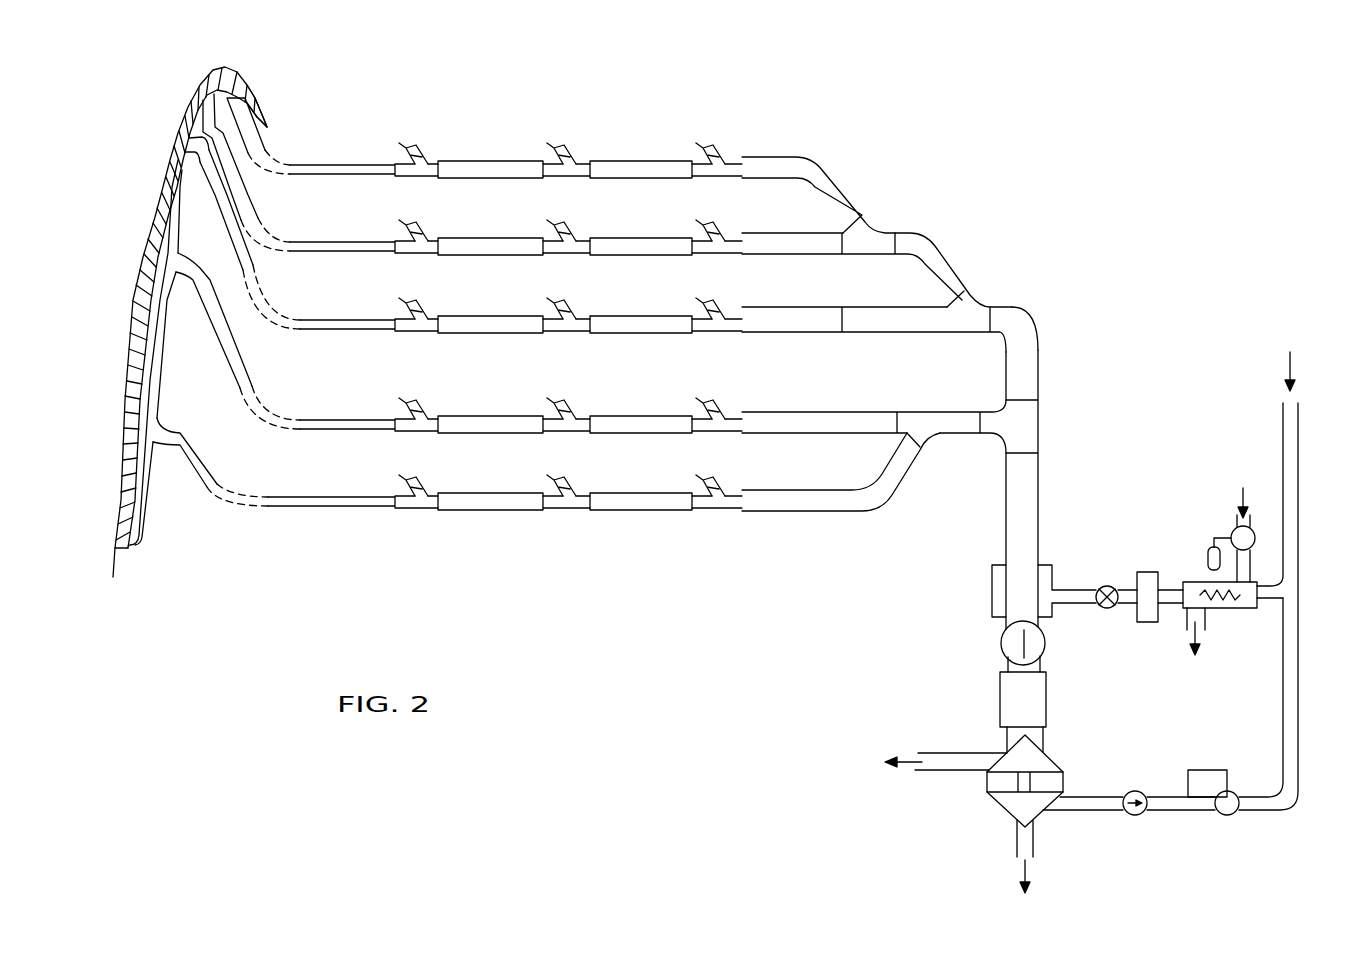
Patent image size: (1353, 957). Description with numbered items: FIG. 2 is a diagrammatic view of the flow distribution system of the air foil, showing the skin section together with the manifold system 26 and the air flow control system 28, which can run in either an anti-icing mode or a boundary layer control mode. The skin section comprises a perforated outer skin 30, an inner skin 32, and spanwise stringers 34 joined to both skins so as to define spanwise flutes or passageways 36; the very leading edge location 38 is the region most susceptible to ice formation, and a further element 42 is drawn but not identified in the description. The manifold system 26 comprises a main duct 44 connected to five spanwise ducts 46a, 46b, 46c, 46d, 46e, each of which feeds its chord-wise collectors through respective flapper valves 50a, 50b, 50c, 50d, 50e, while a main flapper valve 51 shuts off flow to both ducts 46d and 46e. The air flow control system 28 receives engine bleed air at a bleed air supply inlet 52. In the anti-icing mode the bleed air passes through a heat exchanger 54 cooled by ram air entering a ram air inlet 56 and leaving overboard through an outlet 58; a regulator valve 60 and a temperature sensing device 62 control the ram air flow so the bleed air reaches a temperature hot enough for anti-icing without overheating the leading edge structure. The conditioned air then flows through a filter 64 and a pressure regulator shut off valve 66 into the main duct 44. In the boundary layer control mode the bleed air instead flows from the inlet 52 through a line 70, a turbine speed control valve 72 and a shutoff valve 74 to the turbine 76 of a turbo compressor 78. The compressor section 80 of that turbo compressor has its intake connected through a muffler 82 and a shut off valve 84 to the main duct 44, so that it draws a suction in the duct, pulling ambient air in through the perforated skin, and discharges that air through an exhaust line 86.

The manifold system 26 is at (605, 540).
The air flow control system 28 is at (1122, 512).
The outer skin 30 is at (135, 300).
The inner skin 32 is at (152, 306).
The stringers 34 is at (150, 253).
The flutes or passageways 36 is at (178, 184).
The leading edge location 38 is at (228, 66).
The skin trailing hook 42 is at (268, 124).
The main duct 44 is at (1015, 482).
The spanwise duct 46a is at (662, 159).
The spanwise duct 46b is at (657, 236).
The spanwise duct 46c is at (657, 314).
The spanwise duct 46d is at (662, 410).
The spanwise duct 46e is at (667, 489).
The flapper valve 50a is at (427, 160).
The flapper valve 50b is at (427, 237).
The flapper valve 50c is at (427, 315).
The flapper valve 50d is at (427, 415).
The flapper valve 50e is at (427, 492).
The main flapper valve 51 is at (927, 420).
The bleed air supply inlet 52 is at (1282, 393).
The heat exchanger 54 is at (1262, 582).
The ram air inlet 56 is at (1238, 512).
The outlet 58 is at (1207, 630).
The regulator valve 60 is at (1256, 545).
The temperature sensing device 62 is at (1210, 548).
The filter 64 is at (1141, 620).
The pressure regulator shut off valve 66 is at (1107, 585).
The line 70 is at (1300, 697).
The turbine speed control valve 72 is at (1227, 816).
The shutoff valve 74 is at (1130, 815).
The turbine 76 is at (1008, 807).
The turbo compressor 78 is at (985, 786).
The compressor section 80 is at (1048, 762).
The muffler 82 is at (1000, 690).
The shut off valve 84 is at (1003, 640).
The exhaust line 86 is at (930, 752).